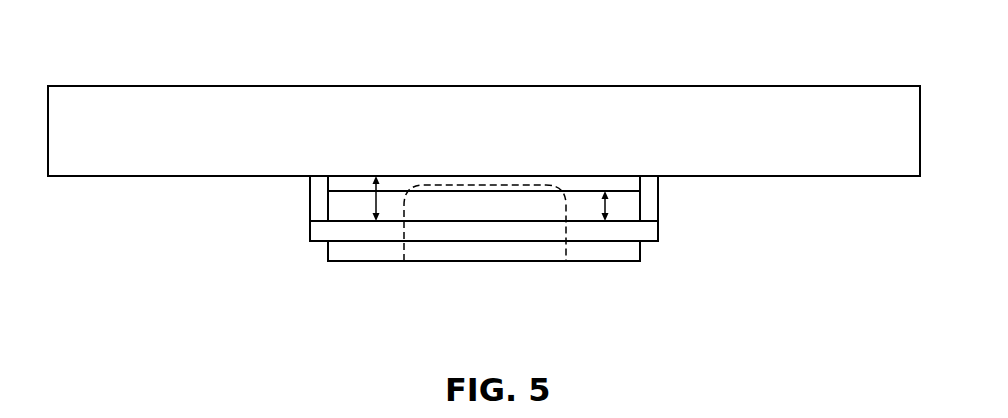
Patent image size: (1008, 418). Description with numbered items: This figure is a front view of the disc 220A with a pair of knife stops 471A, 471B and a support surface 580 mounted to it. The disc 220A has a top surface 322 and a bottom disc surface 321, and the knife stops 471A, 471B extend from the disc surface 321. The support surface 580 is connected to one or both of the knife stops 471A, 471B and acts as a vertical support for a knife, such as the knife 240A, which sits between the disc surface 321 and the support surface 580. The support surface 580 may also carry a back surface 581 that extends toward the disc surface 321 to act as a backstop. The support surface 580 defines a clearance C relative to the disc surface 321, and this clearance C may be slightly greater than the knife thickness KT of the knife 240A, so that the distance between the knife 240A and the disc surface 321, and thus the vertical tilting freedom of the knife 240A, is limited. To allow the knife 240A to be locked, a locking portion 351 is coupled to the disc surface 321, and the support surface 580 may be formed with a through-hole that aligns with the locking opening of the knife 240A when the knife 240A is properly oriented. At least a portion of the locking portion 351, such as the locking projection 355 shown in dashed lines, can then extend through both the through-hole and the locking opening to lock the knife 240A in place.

The disc 220A is at (823, 107).
The top surface 322 is at (672, 84).
The disc surface 321 is at (860, 178).
The knife stop 471A is at (317, 190).
The knife stop 471B is at (658, 197).
The support surface 580 is at (650, 230).
The locking portion 351 is at (578, 266).
The back surface 581 is at (343, 185).
The locking projection 355 is at (543, 187).
The knife 240A is at (360, 210).
The clearance C is at (378, 208).
The knife thickness KT is at (608, 205).